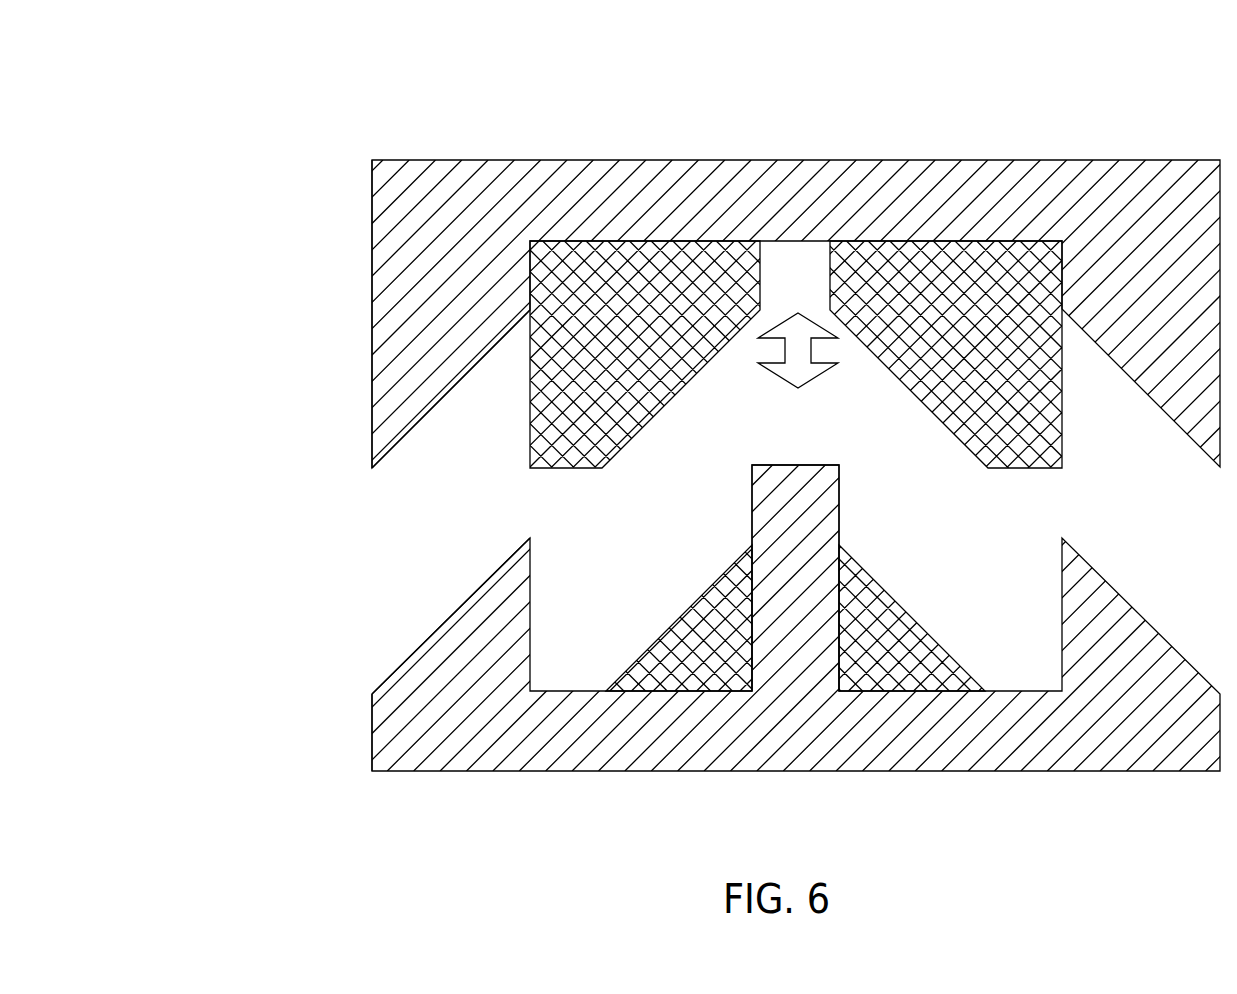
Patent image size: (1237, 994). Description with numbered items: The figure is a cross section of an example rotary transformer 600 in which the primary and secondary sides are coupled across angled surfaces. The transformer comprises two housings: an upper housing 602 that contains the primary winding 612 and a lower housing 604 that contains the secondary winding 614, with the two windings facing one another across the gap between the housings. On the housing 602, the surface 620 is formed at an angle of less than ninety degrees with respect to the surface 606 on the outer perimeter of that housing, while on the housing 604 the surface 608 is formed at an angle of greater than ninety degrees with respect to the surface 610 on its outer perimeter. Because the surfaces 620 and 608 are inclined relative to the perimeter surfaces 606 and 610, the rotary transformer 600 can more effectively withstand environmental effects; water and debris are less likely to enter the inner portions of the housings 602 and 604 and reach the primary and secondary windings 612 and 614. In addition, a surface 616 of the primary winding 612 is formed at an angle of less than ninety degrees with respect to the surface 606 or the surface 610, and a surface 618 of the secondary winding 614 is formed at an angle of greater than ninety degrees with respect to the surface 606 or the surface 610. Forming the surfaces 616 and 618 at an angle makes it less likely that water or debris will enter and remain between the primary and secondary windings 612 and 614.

The rotary transformer 600 is at (297, 77).
The housing 602 is at (888, 160).
The housing 604 is at (795, 771).
The surface on the outer perimeter of the housing 606 is at (370, 263).
The surface of the housing 608 is at (427, 632).
The surface on the outer perimeter of the housing 610 is at (368, 733).
The primary winding 612 is at (563, 468).
The secondary winding 614 is at (670, 627).
The surface of the primary winding 616 is at (794, 378).
The surface of the secondary winding 618 is at (710, 570).
The surface of the housing 620 is at (457, 394).